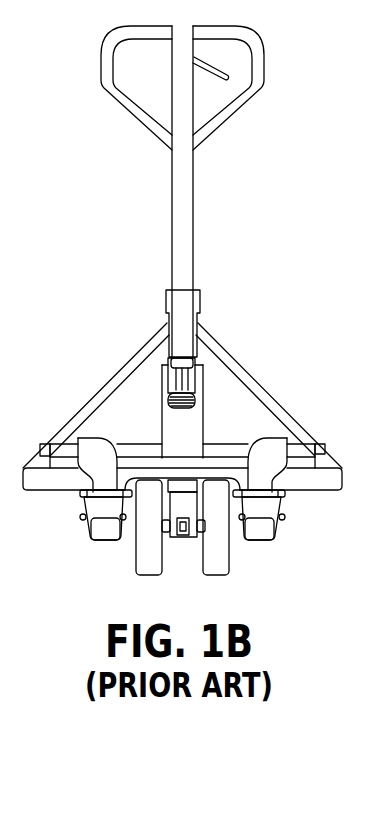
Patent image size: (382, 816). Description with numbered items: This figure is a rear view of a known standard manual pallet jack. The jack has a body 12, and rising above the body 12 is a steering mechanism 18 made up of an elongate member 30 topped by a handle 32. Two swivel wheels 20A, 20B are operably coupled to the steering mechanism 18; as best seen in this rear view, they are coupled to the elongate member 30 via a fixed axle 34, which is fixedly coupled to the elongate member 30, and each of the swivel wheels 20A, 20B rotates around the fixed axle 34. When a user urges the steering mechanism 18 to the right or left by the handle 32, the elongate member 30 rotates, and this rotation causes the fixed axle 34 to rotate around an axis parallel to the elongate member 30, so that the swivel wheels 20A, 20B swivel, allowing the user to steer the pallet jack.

The steering mechanism 18 is at (68, 220).
The body 12 is at (125, 410).
The elongate member 30 is at (193, 258).
The handle 32 is at (230, 118).
The swivel wheel 20A is at (137, 545).
The swivel wheel 20B is at (230, 545).
The fixed axle 34 is at (163, 540).